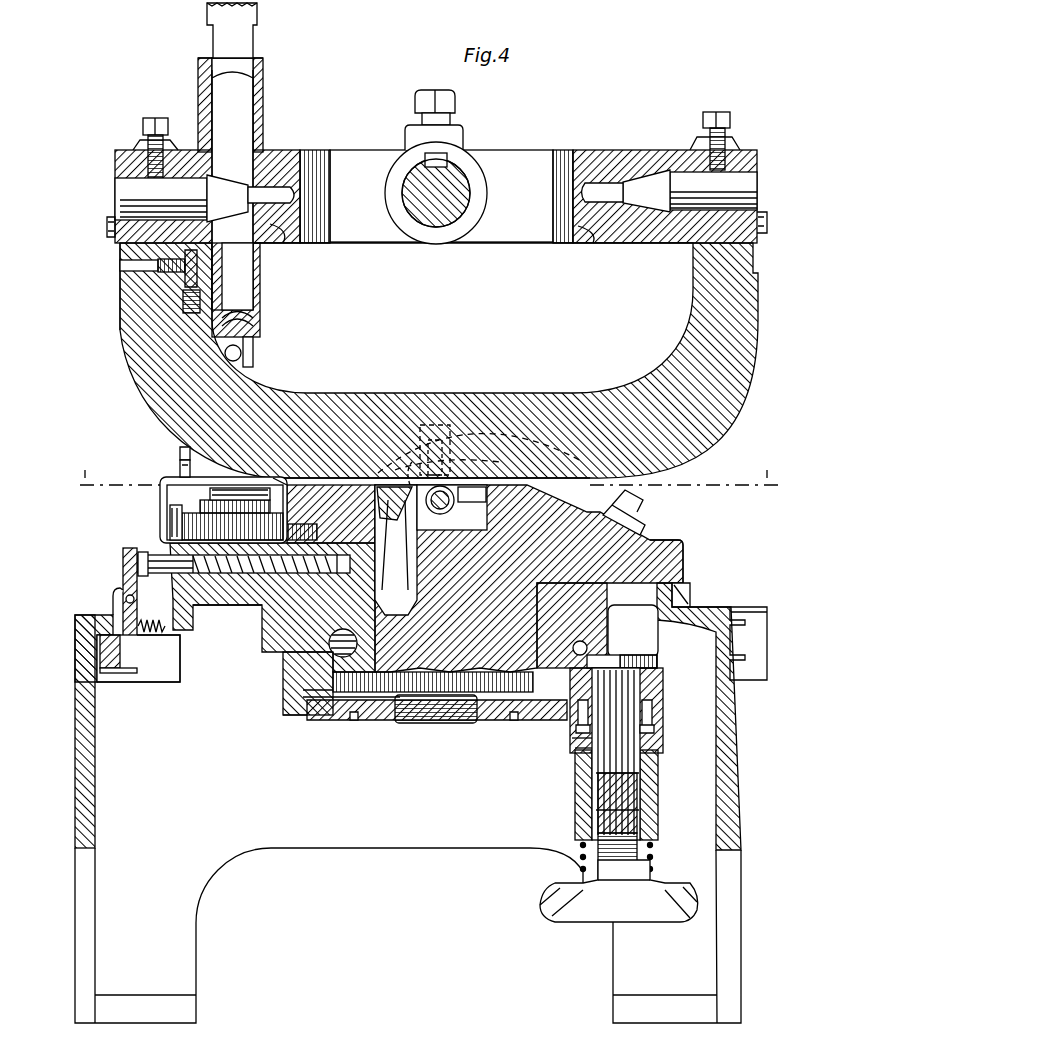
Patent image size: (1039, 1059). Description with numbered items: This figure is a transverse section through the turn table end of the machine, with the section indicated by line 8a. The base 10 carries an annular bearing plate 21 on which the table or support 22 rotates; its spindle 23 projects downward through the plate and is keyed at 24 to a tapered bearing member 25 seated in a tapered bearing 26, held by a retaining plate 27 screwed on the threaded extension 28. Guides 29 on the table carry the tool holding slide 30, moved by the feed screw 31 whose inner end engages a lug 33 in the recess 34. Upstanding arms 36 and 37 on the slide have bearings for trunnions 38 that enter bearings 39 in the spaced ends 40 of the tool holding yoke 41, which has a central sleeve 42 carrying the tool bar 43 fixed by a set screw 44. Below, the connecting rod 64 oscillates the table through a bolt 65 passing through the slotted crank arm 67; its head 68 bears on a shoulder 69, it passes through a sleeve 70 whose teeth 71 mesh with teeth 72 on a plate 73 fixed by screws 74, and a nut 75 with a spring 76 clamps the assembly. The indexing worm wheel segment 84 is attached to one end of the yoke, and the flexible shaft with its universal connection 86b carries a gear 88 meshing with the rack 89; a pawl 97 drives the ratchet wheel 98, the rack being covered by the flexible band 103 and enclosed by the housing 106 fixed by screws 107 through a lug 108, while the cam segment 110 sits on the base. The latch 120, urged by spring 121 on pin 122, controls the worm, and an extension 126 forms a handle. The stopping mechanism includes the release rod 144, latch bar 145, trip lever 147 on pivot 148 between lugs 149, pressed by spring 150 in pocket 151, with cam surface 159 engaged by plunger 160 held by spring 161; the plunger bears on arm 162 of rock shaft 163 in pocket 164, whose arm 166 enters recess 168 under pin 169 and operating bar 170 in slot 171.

The base 10 is at (737, 820).
The annular bearing plate 21 is at (690, 592).
The table or support 22 is at (685, 543).
The spindle 23 is at (300, 712).
The key 24 is at (340, 655).
The tapered bearing member 25 is at (333, 690).
The tapered bearing 26 is at (262, 640).
The retaining plate 27 is at (333, 722).
The threaded extension 28 is at (455, 724).
The guides 29 is at (545, 503).
The tool holding slide 30 is at (512, 405).
The feed screw 31 is at (471, 497).
The lug 33 is at (445, 510).
The recess 34 is at (480, 515).
The upstanding arm 36 is at (692, 262).
The upstanding arm 37 is at (132, 280).
The trunnions 38 is at (128, 190).
The bearings 39 is at (285, 243).
The spaced ends 40 is at (276, 160).
The tool holding yoke 41 is at (356, 152).
The sleeve or bearing 42 is at (466, 160).
The tool bar or arbor 43 is at (437, 215).
The set screw 44 is at (447, 102).
The connecting rod 64 is at (655, 832).
The bolt 65 is at (658, 790).
The crank arm 67 is at (663, 682).
The head 68 is at (658, 660).
The shoulder 69 is at (585, 645).
The sleeve 70 is at (640, 815).
The teeth 71 is at (580, 755).
The teeth 72 is at (580, 745).
The plate 73 is at (575, 722).
The screws 74 is at (656, 714).
The nut 75 is at (562, 912).
The spring 76 is at (658, 865).
The worm wheel segment 84 is at (255, 100).
The universal connection 86b is at (253, 362).
The gear 88 is at (170, 532).
The rack 89 is at (317, 530).
The pawl 97 is at (275, 476).
The ratchet wheel 98 is at (200, 506).
The flexible band 103 is at (182, 525).
The housing 106 is at (168, 497).
The screws 107 is at (183, 466).
The lug 108 is at (183, 452).
The segment 110 is at (765, 620).
The hand control latch or lever 120 is at (262, 285).
The spring 121 is at (260, 308).
The pin 122 is at (120, 266).
The extension 126 is at (251, 40).
The release rod 144 is at (100, 650).
The latch bar 145 is at (100, 671).
The trip lever 147 is at (123, 622).
The pivot 148 is at (116, 590).
The upstanding lugs 149 is at (124, 600).
The spring 150 is at (152, 636).
The pocket 151 is at (167, 672).
The cam or inclined surface 159 is at (180, 556).
The spring-pressed plunger 160 is at (140, 565).
The spring 161 is at (245, 608).
The arm 162 is at (405, 562).
The rock shaft 163 is at (384, 488).
The pocket 164 is at (345, 628).
The upstanding arm 166 is at (402, 461).
The recess 168 is at (463, 462).
The pin 169 is at (480, 440).
The operating bar 170 is at (440, 440).
The slot 171 is at (414, 430).
The section line 8a is at (427, 484).